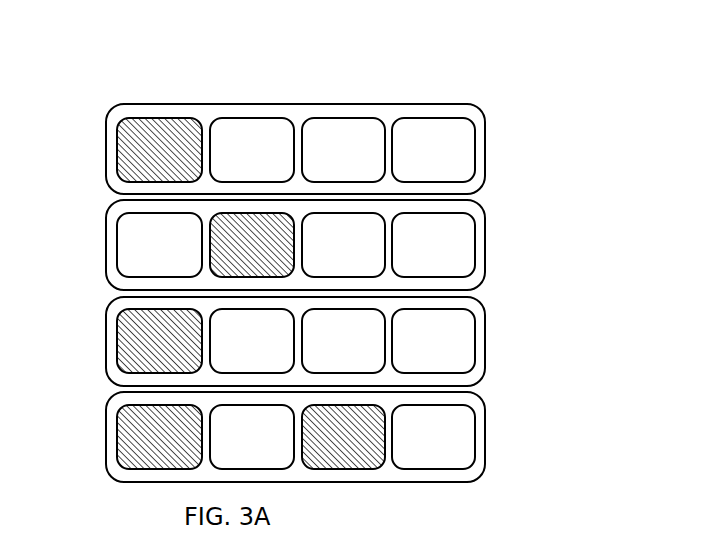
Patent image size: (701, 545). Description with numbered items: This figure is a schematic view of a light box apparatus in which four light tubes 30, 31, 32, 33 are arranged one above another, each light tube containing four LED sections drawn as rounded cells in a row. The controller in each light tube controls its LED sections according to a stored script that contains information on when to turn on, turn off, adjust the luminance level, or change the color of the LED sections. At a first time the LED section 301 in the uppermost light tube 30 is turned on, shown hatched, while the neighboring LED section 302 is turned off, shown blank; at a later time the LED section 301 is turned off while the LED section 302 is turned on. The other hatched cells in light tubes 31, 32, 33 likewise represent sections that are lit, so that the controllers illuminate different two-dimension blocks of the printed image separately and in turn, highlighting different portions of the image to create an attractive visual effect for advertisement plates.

The light tube 30 is at (314, 109).
The light tube 31 is at (485, 253).
The light tube 32 is at (485, 350).
The light tube 33 is at (485, 445).
The LED section 301 is at (137, 120).
The LED section 302 is at (252, 143).